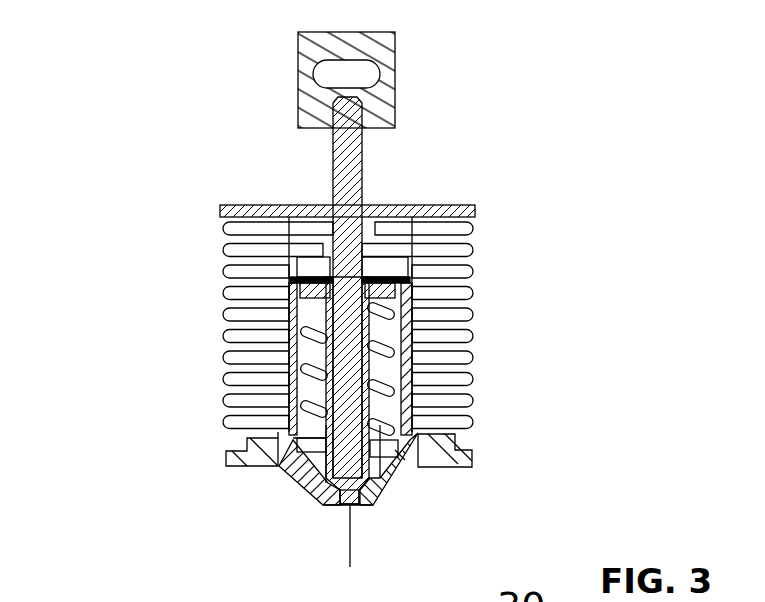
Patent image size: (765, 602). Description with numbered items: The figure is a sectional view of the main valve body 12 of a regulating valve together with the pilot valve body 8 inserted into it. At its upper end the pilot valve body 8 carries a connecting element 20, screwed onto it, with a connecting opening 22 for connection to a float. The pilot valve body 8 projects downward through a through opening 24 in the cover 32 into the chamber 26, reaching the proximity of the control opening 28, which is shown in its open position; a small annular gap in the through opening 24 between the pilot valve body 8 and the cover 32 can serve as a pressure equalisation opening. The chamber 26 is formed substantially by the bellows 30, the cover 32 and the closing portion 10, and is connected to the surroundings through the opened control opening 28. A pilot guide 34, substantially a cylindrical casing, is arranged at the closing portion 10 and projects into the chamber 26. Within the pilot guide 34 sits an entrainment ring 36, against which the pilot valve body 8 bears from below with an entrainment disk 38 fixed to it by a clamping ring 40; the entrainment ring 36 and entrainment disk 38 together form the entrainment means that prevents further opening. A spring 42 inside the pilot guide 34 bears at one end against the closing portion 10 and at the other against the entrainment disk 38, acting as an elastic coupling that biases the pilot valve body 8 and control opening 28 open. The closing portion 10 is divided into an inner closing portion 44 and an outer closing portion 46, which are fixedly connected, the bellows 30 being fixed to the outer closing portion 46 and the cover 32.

The pilot valve body 8 is at (357, 175).
The closing portion 10 is at (300, 476).
The main valve body 12 is at (370, 284).
The connecting element 20 is at (378, 40).
The connecting opening 22 is at (362, 70).
The through opening 24 is at (385, 200).
The chamber 26 is at (390, 365).
The control opening 28 is at (353, 503).
The bellows 30 is at (475, 262).
The cover 32 is at (300, 205).
The pilot guide 34 is at (290, 283).
The entrainment ring 36 is at (222, 235).
The entrainment disk 38 is at (395, 300).
The clamping ring 40 is at (322, 270).
The spring 42 is at (305, 366).
The inner closing portion 44 is at (400, 480).
The outer closing portion 46 is at (455, 432).